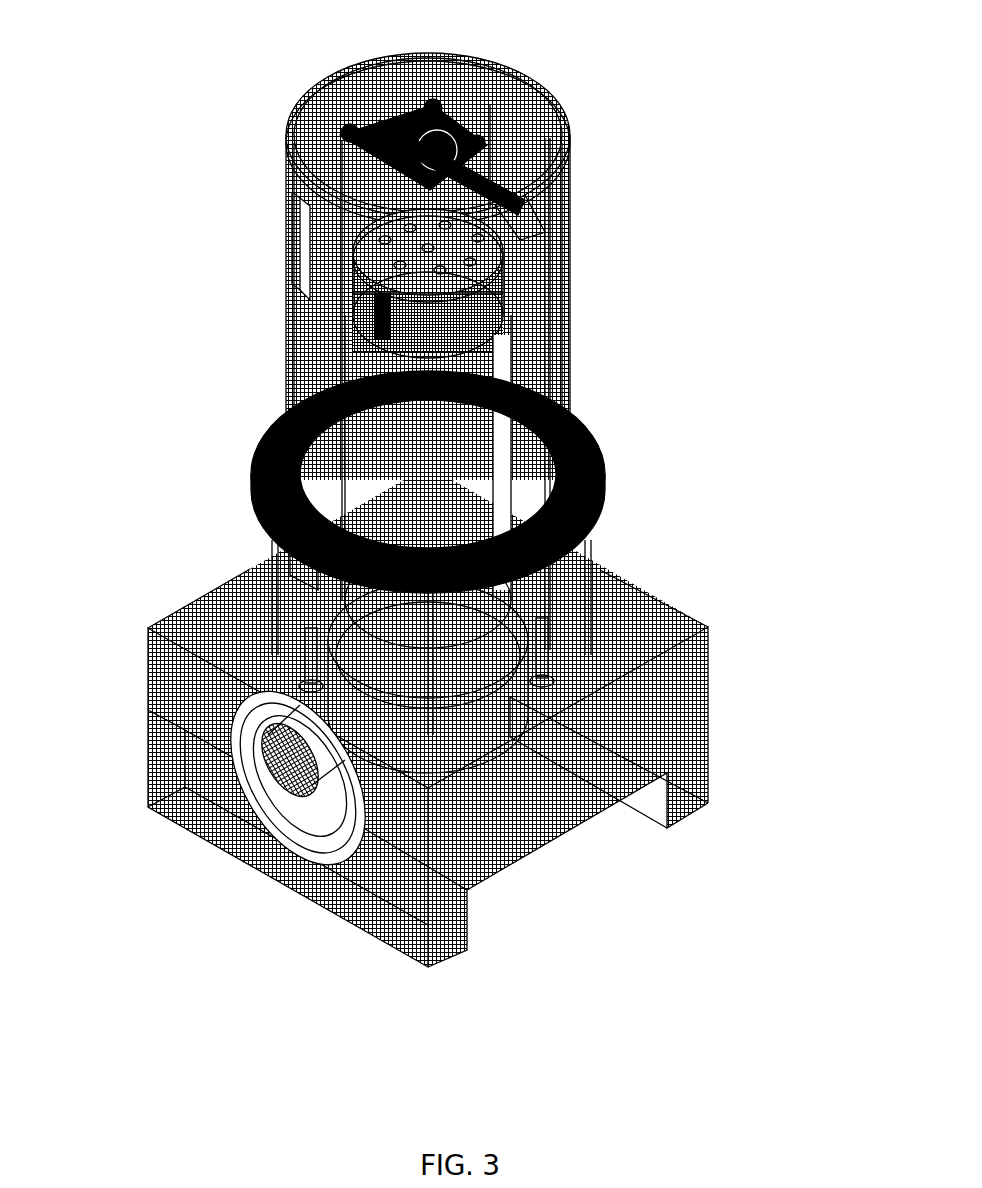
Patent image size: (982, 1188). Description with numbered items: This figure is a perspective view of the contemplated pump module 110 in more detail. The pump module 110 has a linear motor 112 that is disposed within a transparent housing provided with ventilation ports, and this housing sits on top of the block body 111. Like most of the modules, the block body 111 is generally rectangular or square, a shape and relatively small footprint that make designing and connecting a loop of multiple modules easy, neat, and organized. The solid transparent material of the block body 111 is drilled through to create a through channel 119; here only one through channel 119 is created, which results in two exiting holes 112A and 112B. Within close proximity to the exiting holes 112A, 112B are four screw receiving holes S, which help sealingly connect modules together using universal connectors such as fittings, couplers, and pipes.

The pump module 110 is at (732, 108).
The block body 111 is at (693, 682).
The linear motor 112 is at (372, 400).
The exiting hole 112A is at (290, 760).
The exiting hole 112B is at (563, 600).
The through channel 119 is at (352, 770).
The screw receiving holes S is at (258, 707).